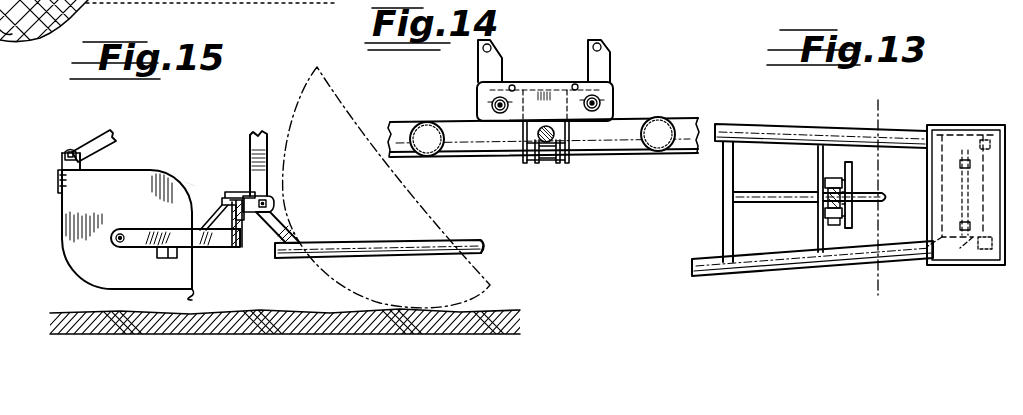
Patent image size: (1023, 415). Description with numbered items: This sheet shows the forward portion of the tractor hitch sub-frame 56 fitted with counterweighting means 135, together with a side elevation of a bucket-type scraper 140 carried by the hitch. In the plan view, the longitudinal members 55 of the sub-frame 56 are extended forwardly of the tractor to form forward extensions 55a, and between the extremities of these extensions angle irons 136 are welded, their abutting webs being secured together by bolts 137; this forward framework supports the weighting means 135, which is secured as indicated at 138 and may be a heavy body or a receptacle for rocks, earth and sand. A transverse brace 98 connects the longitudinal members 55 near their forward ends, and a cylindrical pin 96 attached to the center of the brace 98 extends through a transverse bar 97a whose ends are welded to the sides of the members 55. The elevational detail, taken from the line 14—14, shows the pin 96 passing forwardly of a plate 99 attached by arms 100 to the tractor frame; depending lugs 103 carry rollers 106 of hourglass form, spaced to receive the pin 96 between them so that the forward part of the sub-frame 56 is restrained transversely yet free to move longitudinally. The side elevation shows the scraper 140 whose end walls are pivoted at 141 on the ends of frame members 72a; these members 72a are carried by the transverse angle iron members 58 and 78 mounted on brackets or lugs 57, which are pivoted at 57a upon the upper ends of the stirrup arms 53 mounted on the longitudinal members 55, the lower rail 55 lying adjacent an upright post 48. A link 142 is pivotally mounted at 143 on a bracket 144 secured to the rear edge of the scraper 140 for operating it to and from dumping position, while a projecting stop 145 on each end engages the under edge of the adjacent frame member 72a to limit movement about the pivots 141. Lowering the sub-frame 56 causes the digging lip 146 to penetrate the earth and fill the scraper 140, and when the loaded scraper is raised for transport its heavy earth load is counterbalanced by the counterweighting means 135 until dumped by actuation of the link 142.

In FIG. 15, the upright post 48 is at (246, 146).
In FIG. 15, the stirrup member 53 is at (276, 223).
In FIG. 15, the longitudinal members 55 is at (420, 232).
In FIG. 13, the longitudinal members 55 is at (788, 132).
In FIG. 14, the forward extensions 55a is at (442, 104).
In FIG. 13, the forward extensions 55a is at (852, 135).
In FIG. 15, the sub-frame 56 is at (486, 254).
In FIG. 13, the sub-frame 56 is at (768, 273).
In FIG. 15, the brackets or lugs 57 is at (264, 198).
In FIG. 15, the pivot 57a is at (268, 205).
In FIG. 15, the transverse angle iron member 58 is at (224, 198).
In FIG. 15, the frame members 72a is at (165, 236).
In FIG. 15, the transverse angle iron member 78 is at (222, 245).
In FIG. 14, the cylindrical pin 96 is at (538, 137).
In FIG. 13, the cylindrical pin 96 is at (789, 176).
In FIG. 14, the transverse bar 97a is at (624, 150).
In FIG. 13, the transverse bar 97a is at (817, 225).
In FIG. 13, the transverse brace 98 is at (724, 182).
In FIG. 14, the plate 99 is at (565, 67).
In FIG. 13, the plate 99 is at (848, 206).
In FIG. 14, the arms 100 is at (486, 70).
In FIG. 13, the arms 100 is at (853, 168).
In FIG. 14, the depending lugs 103 is at (568, 162).
In FIG. 13, the depending lugs 103 is at (838, 224).
In FIG. 14, the roller 106 is at (545, 161).
In FIG. 13, the roller 106 is at (826, 192).
In FIG. 13, the counterweighting means 135 is at (937, 126).
In FIG. 13, the angle irons 136 is at (961, 264).
In FIG. 13, the bolts 137 is at (911, 258).
In FIG. 13, the securing means 138 is at (996, 110).
In FIG. 15, the bucket-type scraper 140 is at (86, 201).
In FIG. 15, the pivots 141 is at (140, 229).
In FIG. 15, the link 142 is at (97, 133).
In FIG. 15, the pivot 143 is at (70, 150).
In FIG. 15, the bracket 144 is at (62, 163).
In FIG. 15, the projecting stop 145 is at (160, 257).
In FIG. 15, the digging lip 146 is at (196, 298).
In FIG. 13, the section line 14- 14 is at (878, 100).